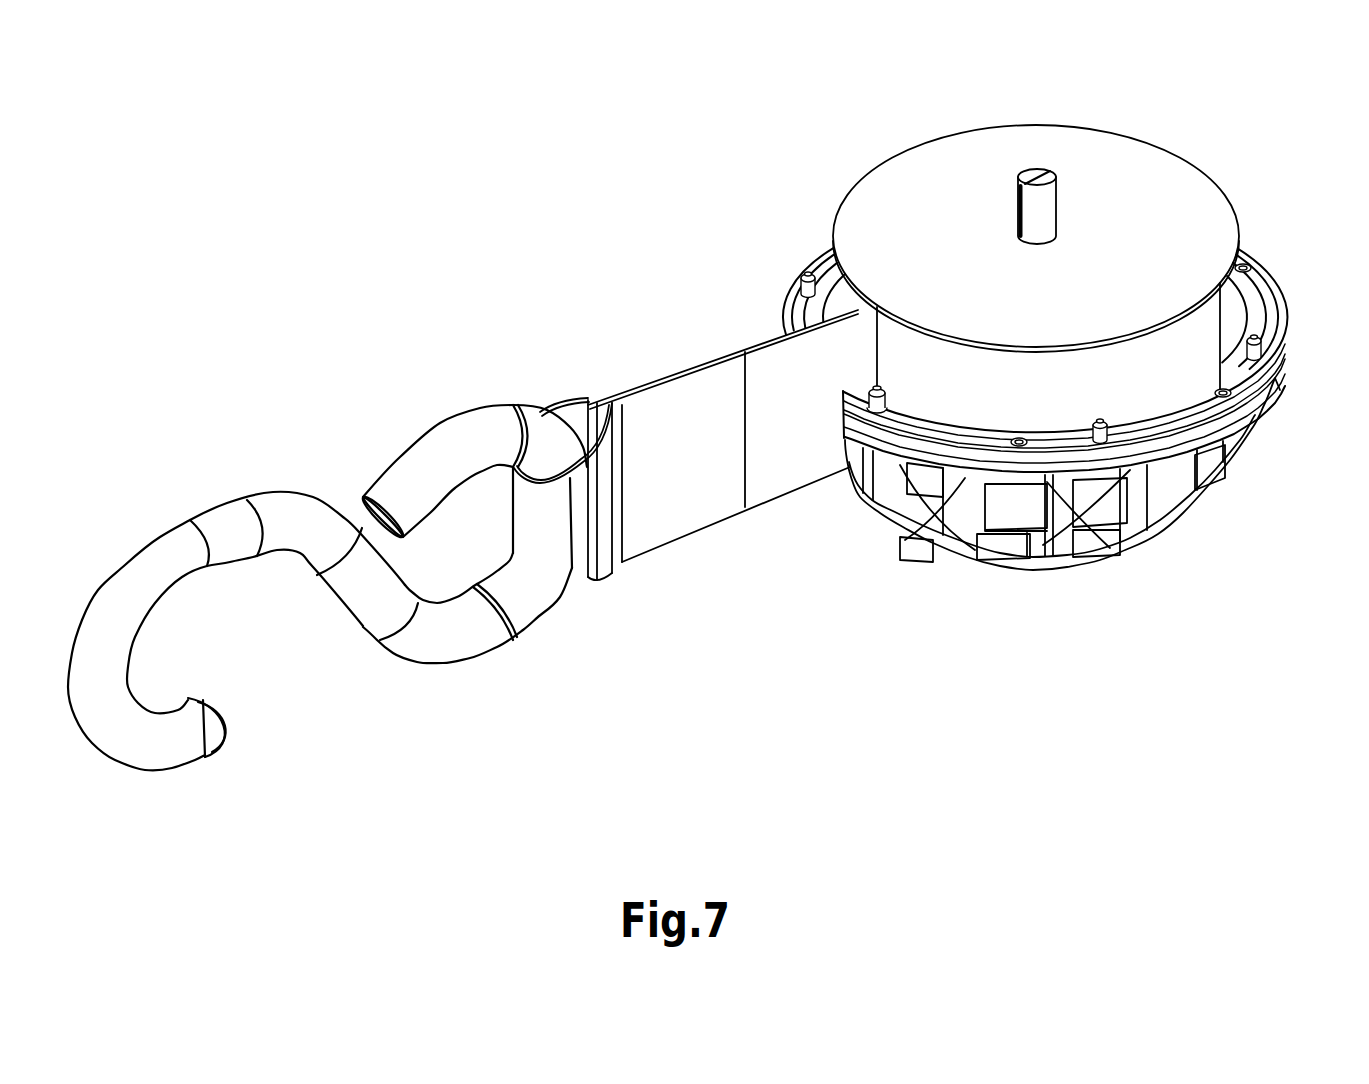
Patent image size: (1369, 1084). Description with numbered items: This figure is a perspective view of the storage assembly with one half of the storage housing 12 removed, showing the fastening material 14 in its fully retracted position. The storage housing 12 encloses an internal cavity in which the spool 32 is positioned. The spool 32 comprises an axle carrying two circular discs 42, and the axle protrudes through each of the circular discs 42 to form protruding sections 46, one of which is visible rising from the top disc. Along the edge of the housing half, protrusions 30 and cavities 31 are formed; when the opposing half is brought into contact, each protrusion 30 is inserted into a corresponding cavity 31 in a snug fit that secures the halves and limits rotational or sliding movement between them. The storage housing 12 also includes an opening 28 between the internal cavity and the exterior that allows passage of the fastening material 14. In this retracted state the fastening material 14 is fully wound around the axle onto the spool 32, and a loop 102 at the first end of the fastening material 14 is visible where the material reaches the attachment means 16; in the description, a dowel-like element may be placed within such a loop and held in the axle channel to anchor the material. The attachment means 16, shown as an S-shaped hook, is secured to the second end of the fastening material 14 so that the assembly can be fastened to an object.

The storage housing 12 is at (1130, 565).
The fastening material 14 is at (693, 490).
The attachment means 16 is at (440, 395).
The opening 28 is at (833, 433).
The protrusions 30 is at (1257, 353).
The cavities 31 is at (1248, 268).
The spool 32 is at (970, 351).
The circular discs 42 is at (1178, 198).
The protruding sections 46 is at (1033, 175).
The loop 102 is at (578, 370).